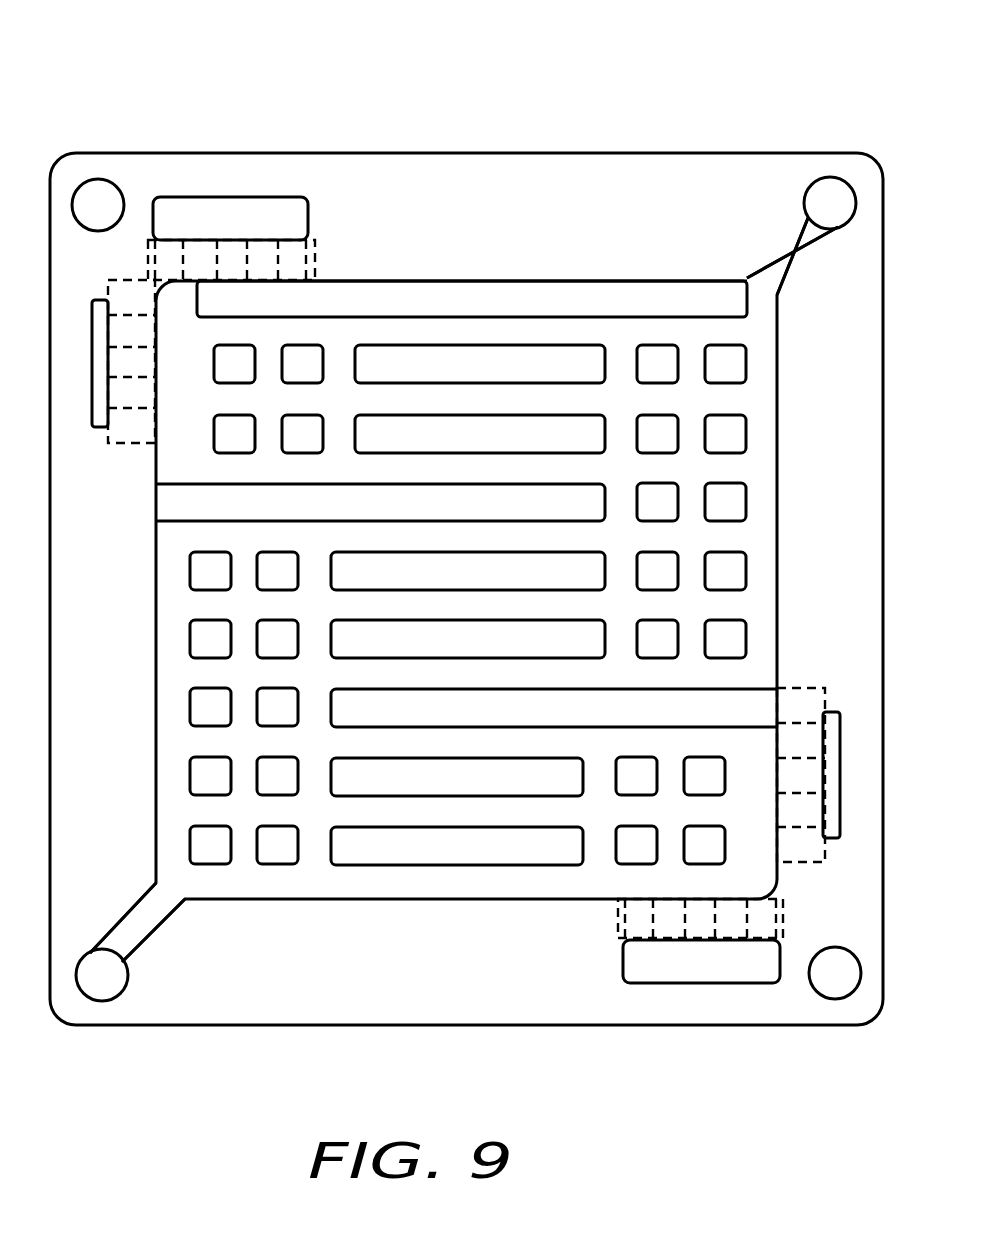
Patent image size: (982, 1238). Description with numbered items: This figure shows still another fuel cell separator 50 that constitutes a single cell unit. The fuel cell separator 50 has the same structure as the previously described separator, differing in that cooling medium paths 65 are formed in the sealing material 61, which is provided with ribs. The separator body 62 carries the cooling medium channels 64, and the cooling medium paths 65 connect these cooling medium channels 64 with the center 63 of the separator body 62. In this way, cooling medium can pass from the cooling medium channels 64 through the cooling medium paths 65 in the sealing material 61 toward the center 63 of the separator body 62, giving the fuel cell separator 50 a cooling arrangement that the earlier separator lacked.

The fuel cell separator 50 is at (531, 130).
The sealing material 61 is at (695, 173).
The separator body 62 is at (717, 395).
The center of the separator body 63 is at (693, 533).
The cooling medium channels 64 is at (833, 177).
The cooling medium paths 65 is at (788, 262).